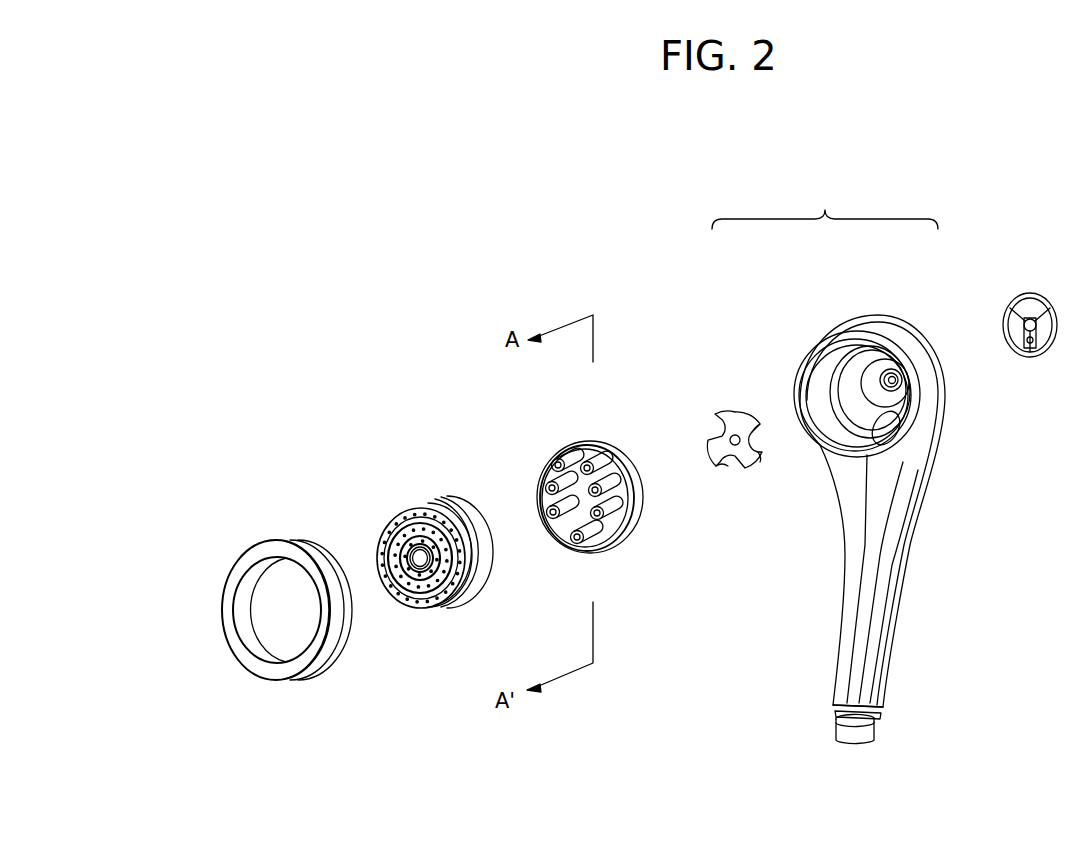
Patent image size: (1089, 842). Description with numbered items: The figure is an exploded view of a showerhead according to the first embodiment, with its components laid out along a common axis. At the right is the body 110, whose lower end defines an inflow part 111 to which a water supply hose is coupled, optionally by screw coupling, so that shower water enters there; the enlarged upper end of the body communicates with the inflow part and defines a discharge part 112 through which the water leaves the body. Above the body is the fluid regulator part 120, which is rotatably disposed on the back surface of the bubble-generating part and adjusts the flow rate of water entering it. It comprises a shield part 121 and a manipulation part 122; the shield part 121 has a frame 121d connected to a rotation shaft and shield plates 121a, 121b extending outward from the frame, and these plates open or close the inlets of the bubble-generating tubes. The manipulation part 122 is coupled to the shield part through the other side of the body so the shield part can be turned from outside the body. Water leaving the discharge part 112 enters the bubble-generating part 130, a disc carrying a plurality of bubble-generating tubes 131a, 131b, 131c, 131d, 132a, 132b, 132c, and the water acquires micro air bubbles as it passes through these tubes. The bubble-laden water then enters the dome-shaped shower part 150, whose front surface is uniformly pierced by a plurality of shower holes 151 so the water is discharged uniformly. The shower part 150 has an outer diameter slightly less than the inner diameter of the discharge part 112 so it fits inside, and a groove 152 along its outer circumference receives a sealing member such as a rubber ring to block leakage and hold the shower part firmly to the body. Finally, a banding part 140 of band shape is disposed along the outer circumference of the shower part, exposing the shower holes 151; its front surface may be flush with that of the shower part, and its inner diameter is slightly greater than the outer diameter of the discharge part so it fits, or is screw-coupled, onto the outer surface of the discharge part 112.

The body 110 is at (886, 550).
The inflow part 111 is at (854, 744).
The discharge part 112 is at (823, 432).
The fluid regulator part 120 is at (873, 360).
The shield part 121 is at (728, 416).
The shield plate 121a is at (724, 466).
The shield plate 121b is at (757, 408).
The frame 121d is at (753, 457).
The manipulation part 122 is at (1006, 301).
The bubble-generating part 130 is at (616, 508).
The bubble-generating tube 131a is at (614, 490).
The bubble-generating tube 131b is at (602, 520).
The bubble-generating tube 131c is at (552, 518).
The bubble-generating tube 131d is at (551, 478).
The bubble-generating tube 132a is at (568, 452).
The bubble-generating tube 132b is at (599, 455).
The bubble-generating tube 132c is at (582, 544).
The banding part 140 is at (257, 552).
The shower part 150 is at (430, 548).
The shower holes 151 is at (427, 609).
The groove 152 is at (446, 500).